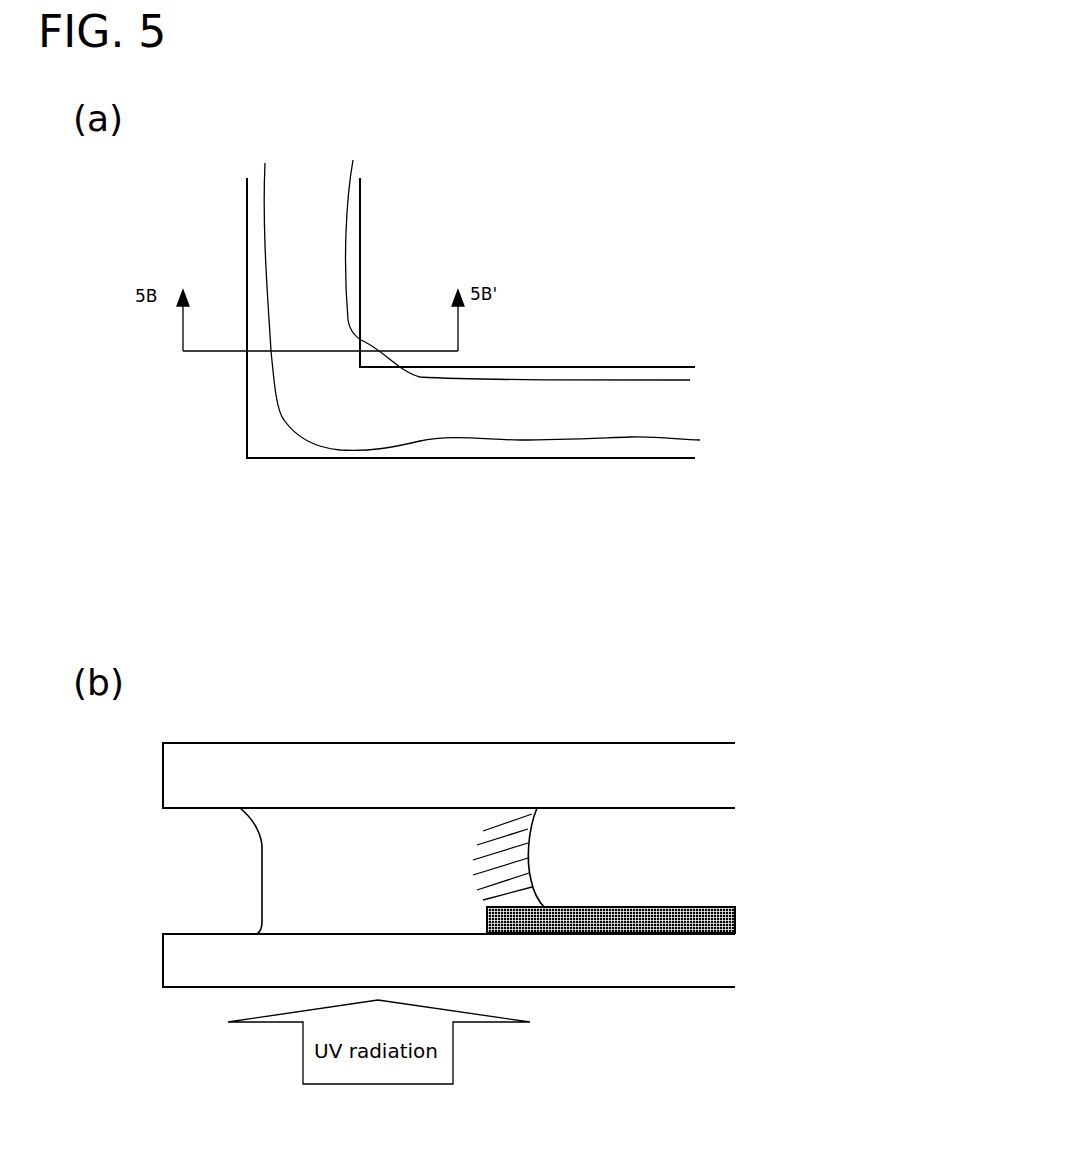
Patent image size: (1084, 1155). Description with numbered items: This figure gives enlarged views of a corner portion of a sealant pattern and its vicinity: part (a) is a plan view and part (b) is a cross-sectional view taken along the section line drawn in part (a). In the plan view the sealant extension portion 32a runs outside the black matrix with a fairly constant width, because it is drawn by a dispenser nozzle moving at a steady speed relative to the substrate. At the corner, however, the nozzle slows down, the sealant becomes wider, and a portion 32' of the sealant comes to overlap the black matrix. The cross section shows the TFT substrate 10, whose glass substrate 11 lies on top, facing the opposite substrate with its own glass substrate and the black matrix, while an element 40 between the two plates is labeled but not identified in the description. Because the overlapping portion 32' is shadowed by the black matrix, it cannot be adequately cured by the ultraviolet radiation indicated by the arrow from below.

The TFT substrate 10 is at (467, 748).
The glass substrate 11 is at (630, 749).
The sealant extension portion 32a is at (608, 425).
The portion of the sealant overlapping the black matrix 32' is at (579, 858).
The liquid crystal layer 40 is at (712, 828).